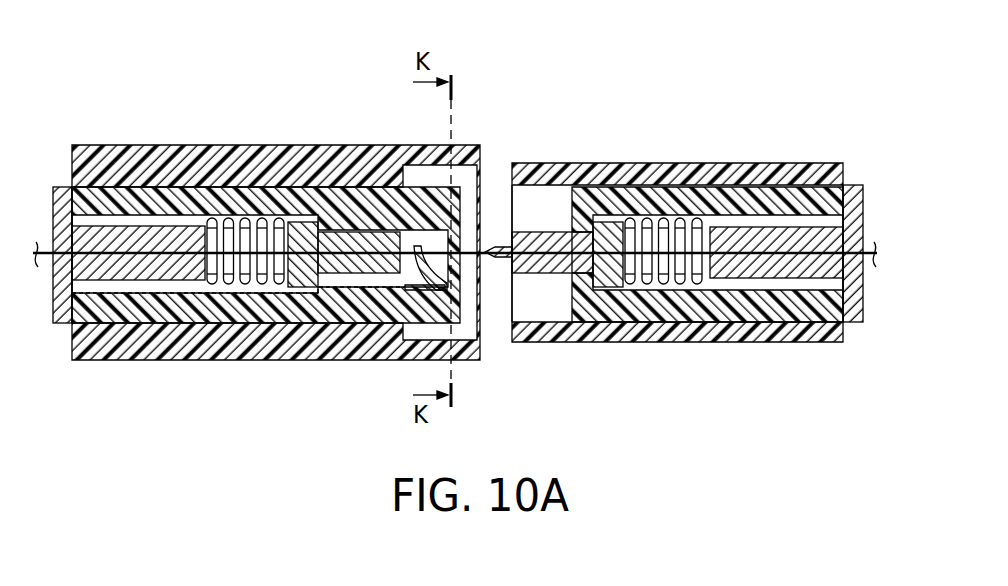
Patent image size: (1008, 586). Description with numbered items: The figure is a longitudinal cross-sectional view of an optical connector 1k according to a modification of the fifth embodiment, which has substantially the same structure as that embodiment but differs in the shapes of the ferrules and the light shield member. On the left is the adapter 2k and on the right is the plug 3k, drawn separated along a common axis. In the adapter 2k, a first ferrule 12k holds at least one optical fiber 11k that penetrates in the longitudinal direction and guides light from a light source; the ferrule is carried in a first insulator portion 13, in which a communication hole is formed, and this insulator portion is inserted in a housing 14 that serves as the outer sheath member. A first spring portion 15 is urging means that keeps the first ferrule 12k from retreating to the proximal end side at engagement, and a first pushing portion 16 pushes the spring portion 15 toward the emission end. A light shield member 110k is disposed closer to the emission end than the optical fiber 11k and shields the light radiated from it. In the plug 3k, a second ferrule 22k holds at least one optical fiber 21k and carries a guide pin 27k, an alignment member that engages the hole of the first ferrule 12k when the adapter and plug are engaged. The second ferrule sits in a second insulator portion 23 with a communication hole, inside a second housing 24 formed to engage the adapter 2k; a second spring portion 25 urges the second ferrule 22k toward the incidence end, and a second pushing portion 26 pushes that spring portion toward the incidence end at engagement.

The optical connector 1k is at (499, 68).
The adapter 2k is at (283, 82).
The plug 3k is at (669, 78).
The optical fiber 11k is at (97, 270).
The first ferrule 12k is at (350, 240).
The first insulator portion 13 is at (305, 193).
The housing 14 is at (192, 156).
The first spring portion 15 is at (247, 232).
The first pushing portion 16 is at (135, 232).
The light shield member 110k is at (447, 252).
The guide pin 27k is at (505, 248).
The second ferrule 22k is at (577, 237).
The second insulator portion 23 is at (653, 195).
The second housing 24 is at (752, 170).
The second spring portion 25 is at (697, 227).
The second pushing portion 26 is at (807, 233).
The optical fiber 21k is at (818, 243).